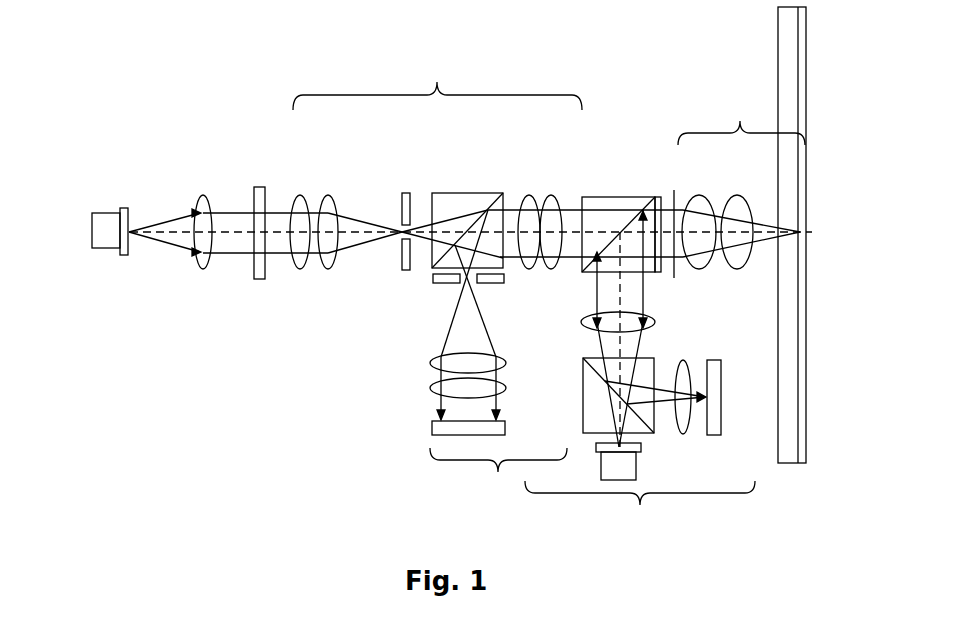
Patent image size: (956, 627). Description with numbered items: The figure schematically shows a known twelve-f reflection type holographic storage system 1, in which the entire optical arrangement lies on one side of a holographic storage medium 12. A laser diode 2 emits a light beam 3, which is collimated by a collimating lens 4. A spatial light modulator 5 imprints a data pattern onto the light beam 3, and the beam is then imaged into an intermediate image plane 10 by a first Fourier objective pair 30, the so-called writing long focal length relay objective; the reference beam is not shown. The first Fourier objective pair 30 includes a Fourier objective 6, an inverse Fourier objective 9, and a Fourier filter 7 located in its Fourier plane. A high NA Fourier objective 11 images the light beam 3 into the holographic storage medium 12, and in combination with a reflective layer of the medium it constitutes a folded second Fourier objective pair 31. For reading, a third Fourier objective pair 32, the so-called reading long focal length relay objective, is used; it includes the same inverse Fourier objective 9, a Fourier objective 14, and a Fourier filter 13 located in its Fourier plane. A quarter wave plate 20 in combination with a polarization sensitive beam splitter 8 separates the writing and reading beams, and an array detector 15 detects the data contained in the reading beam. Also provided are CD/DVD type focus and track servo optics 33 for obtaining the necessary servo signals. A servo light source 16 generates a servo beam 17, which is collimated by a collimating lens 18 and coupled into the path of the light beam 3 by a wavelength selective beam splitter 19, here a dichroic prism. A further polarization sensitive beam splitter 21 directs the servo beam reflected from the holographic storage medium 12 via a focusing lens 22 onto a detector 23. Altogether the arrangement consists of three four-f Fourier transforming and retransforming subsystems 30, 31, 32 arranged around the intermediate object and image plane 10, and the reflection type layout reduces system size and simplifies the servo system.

The optical system 1 is at (197, 140).
The laser diode 2 is at (112, 253).
The light beam 3 is at (178, 215).
The collimating lens 4 is at (200, 270).
The spatial light modulator 5 is at (257, 282).
The Fourier objective 6 is at (312, 273).
The Fourier filter 7 is at (398, 264).
The polarization sensitive beam splitter 8 is at (458, 193).
The inverse Fourier objective 9 is at (540, 195).
The intermediate image plane 10 is at (668, 190).
The high NA Fourier objective 11 is at (722, 195).
The holographic storage medium 12 is at (776, 88).
The Fourier filter 13 is at (432, 283).
The Fourier objective 14 is at (428, 377).
The array detector 15 is at (428, 430).
The servo light source 16 is at (640, 463).
The servo beam 17 is at (593, 341).
The collimating lens 18 is at (578, 324).
The wavelength selective beam splitter 19 is at (580, 275).
The quarter wave plate 20 is at (677, 277).
The further polarization sensitive beam splitter 21 is at (658, 353).
The focusing lens 22 is at (688, 433).
The detector 23 is at (719, 353).
The first Fourier objective pair 30 is at (437, 84).
The folded second Fourier objective pair 31 is at (741, 121).
The third Fourier objective pair 32 is at (498, 475).
The CD/DVD type focus and track servo optics 33 is at (640, 506).